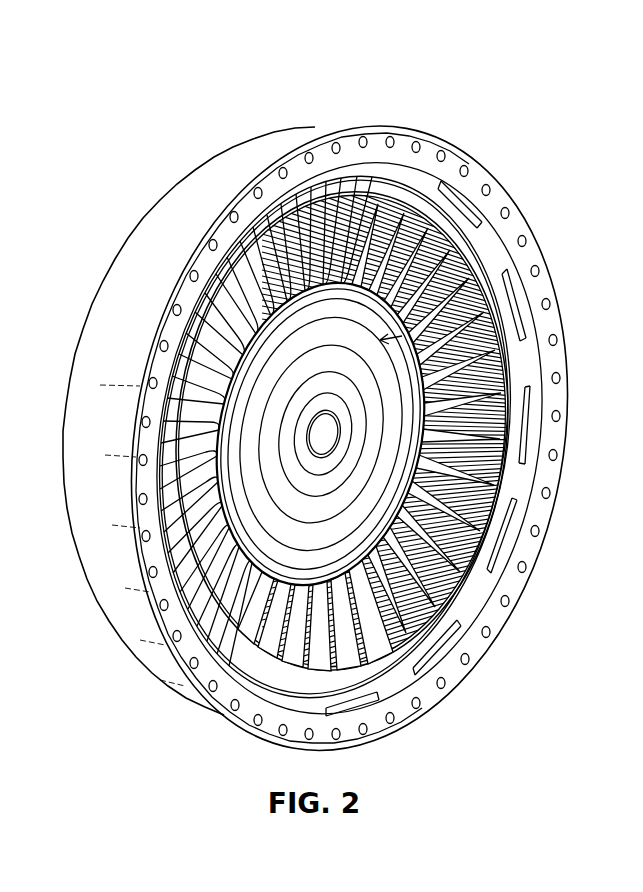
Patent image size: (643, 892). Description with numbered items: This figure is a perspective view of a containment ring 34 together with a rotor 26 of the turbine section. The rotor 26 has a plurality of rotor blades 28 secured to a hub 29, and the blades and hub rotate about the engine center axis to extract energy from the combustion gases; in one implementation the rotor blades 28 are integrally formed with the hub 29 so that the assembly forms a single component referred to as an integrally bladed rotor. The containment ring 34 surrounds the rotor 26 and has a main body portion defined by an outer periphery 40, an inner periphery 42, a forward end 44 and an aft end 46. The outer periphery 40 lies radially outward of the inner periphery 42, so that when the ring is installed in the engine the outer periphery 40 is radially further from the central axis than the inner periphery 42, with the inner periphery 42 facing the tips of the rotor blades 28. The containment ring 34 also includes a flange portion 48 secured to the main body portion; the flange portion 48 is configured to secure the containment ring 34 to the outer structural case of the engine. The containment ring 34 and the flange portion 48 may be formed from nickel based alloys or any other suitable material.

The rotor 26 is at (470, 297).
The rotor blades 28 is at (375, 578).
The hub 29 is at (373, 485).
The containment ring 34 is at (277, 119).
The outer periphery 40 is at (190, 192).
The inner periphery 42 is at (460, 258).
The forward end 44 is at (147, 220).
The aft end 46 is at (398, 183).
The flange portion 48 is at (383, 135).